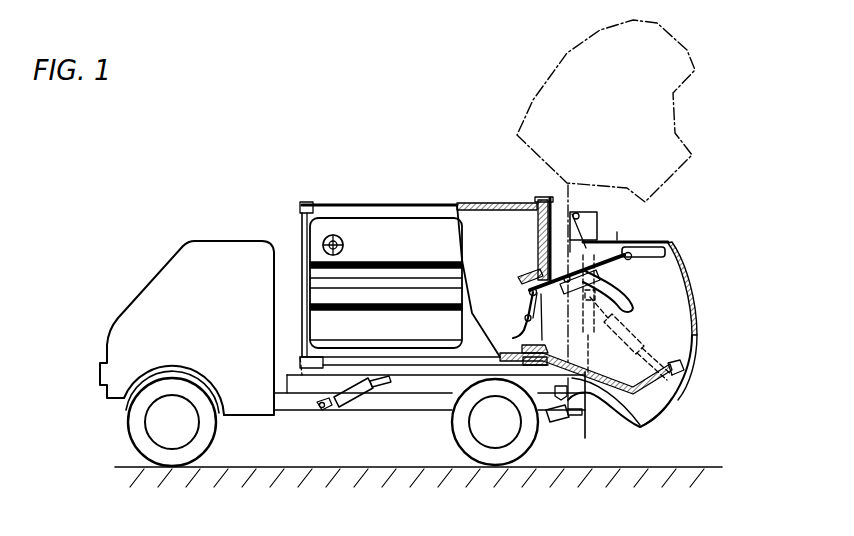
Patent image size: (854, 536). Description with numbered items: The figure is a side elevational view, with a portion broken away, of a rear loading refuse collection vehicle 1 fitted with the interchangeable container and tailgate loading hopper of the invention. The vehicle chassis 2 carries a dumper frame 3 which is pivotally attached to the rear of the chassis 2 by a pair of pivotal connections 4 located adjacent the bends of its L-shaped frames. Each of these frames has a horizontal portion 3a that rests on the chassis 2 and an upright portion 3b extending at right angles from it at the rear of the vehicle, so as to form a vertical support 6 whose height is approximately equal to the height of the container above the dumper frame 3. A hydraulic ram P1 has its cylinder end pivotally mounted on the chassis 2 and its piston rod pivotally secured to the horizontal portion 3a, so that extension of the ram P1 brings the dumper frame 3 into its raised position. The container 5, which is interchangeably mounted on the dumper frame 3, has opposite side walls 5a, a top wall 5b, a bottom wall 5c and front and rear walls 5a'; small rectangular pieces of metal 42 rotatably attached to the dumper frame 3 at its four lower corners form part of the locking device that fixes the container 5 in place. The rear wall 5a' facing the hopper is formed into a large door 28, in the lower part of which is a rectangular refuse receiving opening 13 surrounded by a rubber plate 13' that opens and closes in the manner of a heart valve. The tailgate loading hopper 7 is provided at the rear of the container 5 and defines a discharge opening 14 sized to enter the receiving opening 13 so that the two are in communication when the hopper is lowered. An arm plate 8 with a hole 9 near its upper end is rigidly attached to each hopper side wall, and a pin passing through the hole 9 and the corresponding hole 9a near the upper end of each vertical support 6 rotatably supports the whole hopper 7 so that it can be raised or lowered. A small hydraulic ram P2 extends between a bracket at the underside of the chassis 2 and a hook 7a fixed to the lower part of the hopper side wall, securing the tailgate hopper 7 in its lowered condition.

The truck 1 is at (237, 240).
The vehicle chassis 2 is at (390, 400).
The dumper frame 3 is at (337, 388).
The horizontal portion 3a is at (413, 384).
The upright portion 3b is at (611, 222).
The pivotal connection 4 is at (615, 402).
The container 5 is at (418, 199).
The side wall 5a is at (497, 262).
The rear wall 5a' is at (295, 252).
The top wall 5b is at (344, 205).
The bottom wall 5c is at (403, 360).
The vertical support 6 is at (597, 213).
The tailgate loading hopper 7 is at (670, 250).
The hook 7a is at (587, 407).
The arm plate 8 is at (602, 235).
The hole 9 is at (576, 212).
The hole 9a is at (580, 214).
The refuse receiving opening 13 is at (545, 275).
The rubber plate 13' is at (519, 260).
The discharge opening 14 is at (513, 338).
The large door 28 is at (540, 222).
The rectangular piece of metal 42 is at (307, 372).
The hydraulic ram P1 is at (347, 400).
The small hydraulic ram P2 is at (563, 414).